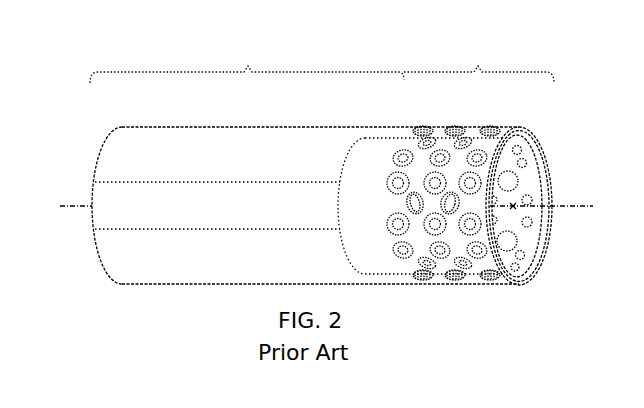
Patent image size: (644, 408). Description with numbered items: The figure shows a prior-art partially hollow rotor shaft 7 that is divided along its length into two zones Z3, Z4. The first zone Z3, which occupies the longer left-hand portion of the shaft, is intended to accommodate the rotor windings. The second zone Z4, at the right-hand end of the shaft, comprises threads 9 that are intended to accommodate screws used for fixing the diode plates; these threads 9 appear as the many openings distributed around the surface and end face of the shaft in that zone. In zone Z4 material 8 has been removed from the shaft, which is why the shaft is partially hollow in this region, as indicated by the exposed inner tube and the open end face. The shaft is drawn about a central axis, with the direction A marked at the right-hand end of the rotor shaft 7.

The rotor shaft 7 is at (256, 126).
The material 8 is at (530, 180).
The threads 9 is at (489, 126).
The zone Z3 is at (247, 64).
The zone Z4 is at (479, 64).
The axial direction A is at (590, 208).